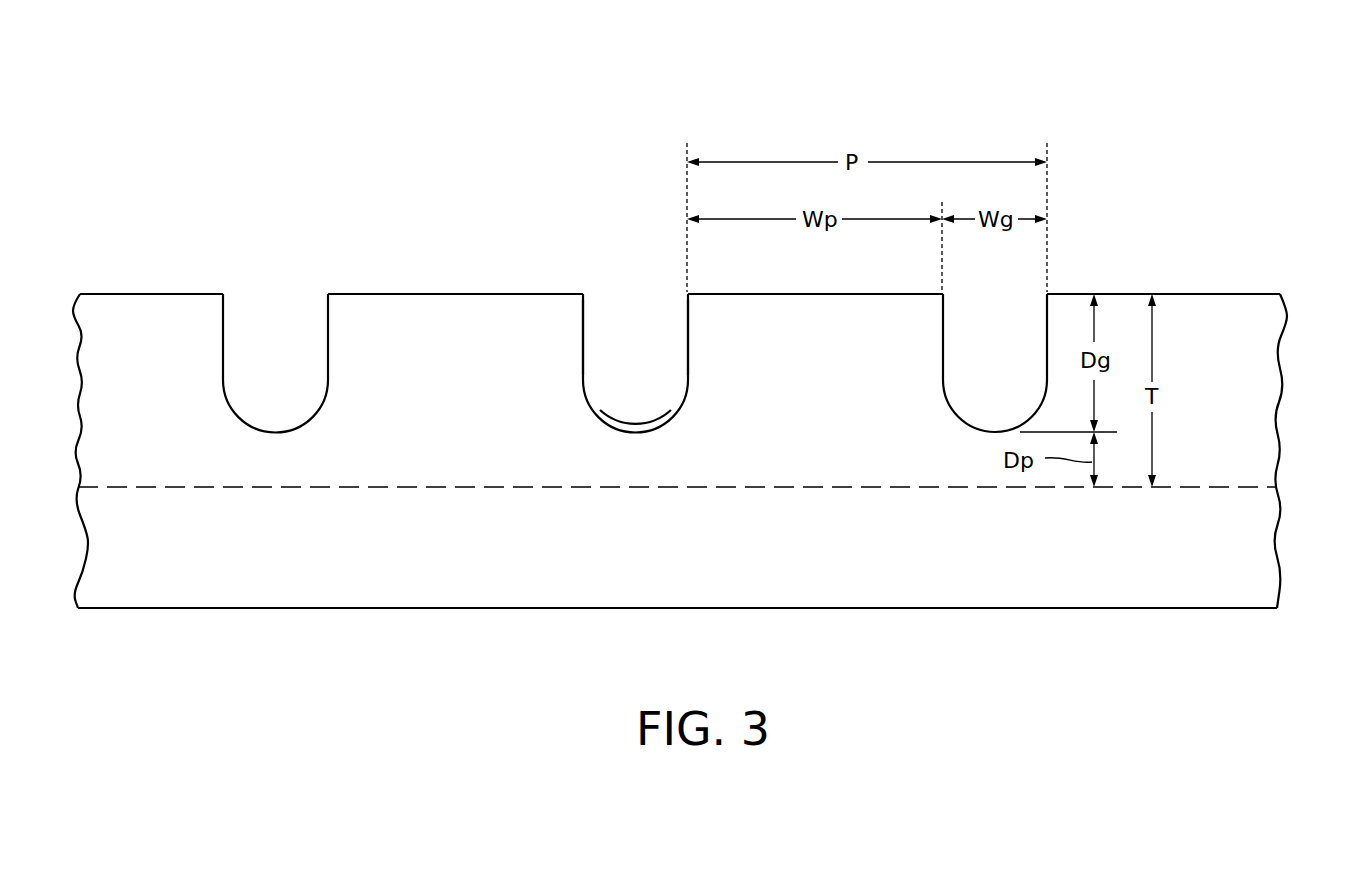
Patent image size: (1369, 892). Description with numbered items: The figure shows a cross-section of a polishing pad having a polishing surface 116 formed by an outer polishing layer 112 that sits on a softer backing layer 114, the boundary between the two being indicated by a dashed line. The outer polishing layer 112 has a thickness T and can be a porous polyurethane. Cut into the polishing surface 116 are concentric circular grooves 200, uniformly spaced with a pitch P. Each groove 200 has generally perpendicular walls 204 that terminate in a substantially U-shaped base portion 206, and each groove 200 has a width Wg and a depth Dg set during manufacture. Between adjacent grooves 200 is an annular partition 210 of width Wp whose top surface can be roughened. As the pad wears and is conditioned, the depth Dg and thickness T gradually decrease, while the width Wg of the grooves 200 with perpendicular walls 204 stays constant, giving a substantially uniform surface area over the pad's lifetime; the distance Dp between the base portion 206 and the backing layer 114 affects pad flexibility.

The outer polishing layer 112 is at (1270, 425).
The backing layer 114 is at (1258, 548).
The polishing surface 116 is at (1128, 294).
The grooves 200 is at (274, 306).
The walls 204 is at (583, 334).
The U-shaped base portion 206 is at (635, 432).
The annular partition 210 is at (260, 103).